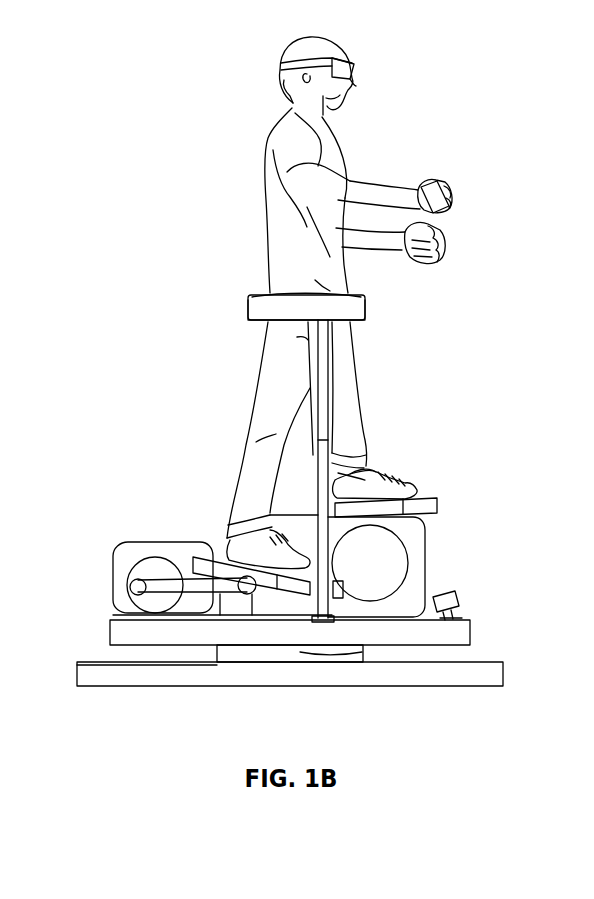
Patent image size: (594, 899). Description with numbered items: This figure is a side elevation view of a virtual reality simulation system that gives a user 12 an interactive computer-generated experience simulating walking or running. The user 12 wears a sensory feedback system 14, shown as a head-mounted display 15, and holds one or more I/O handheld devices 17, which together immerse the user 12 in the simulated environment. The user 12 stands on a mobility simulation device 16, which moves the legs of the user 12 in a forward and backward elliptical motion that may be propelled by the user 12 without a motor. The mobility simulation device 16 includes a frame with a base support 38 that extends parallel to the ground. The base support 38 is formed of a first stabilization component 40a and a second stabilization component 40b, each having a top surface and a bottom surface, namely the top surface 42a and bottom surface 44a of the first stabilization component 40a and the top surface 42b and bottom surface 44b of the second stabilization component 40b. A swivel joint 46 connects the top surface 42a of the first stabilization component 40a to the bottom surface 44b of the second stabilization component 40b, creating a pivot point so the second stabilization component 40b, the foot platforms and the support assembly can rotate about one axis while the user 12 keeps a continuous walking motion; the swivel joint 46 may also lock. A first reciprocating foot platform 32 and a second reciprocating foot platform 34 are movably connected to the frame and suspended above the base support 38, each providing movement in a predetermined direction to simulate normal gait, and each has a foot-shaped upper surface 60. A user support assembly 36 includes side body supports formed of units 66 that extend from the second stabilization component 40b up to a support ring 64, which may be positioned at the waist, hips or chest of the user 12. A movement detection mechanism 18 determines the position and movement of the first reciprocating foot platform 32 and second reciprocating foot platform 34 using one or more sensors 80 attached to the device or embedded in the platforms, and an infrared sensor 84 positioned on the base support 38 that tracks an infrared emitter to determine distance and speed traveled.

The user 12 is at (268, 136).
The sensory feedback system 14 is at (358, 60).
The head-mounted display 15 is at (360, 78).
The mobility simulation device 16 is at (98, 487).
The I/O handheld device 17 is at (455, 190).
The movement detection mechanism 18 is at (278, 587).
The first reciprocating foot platform 32 is at (205, 543).
The second reciprocating foot platform 34 is at (435, 494).
The user support assembly 36 is at (240, 305).
The base support 38 is at (100, 648).
The first stabilization component 40a is at (506, 682).
The second stabilization component 40b is at (472, 642).
The top surface of the first stabilization component 42a is at (462, 616).
The top surface of the second stabilization component 42b is at (486, 663).
The bottom surface of the first stabilization component 44a is at (472, 687).
The bottom surface of the second stabilization component 44b is at (445, 647).
The swivel joint 46 is at (305, 650).
The upper surface 60 is at (218, 548).
The support ring 64 is at (358, 310).
The unit 66 is at (325, 385).
The sensor 80 is at (295, 584).
The infrared sensor 84 is at (445, 596).